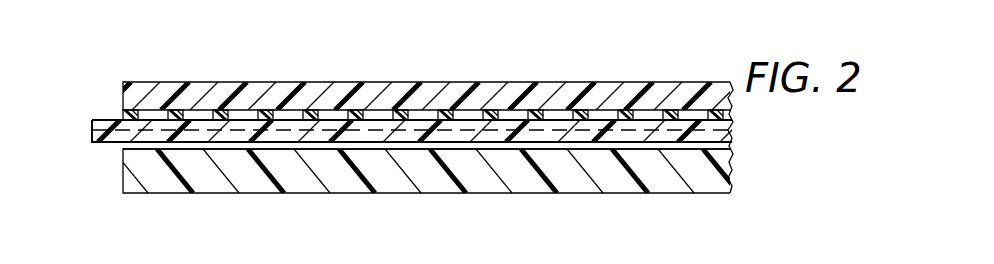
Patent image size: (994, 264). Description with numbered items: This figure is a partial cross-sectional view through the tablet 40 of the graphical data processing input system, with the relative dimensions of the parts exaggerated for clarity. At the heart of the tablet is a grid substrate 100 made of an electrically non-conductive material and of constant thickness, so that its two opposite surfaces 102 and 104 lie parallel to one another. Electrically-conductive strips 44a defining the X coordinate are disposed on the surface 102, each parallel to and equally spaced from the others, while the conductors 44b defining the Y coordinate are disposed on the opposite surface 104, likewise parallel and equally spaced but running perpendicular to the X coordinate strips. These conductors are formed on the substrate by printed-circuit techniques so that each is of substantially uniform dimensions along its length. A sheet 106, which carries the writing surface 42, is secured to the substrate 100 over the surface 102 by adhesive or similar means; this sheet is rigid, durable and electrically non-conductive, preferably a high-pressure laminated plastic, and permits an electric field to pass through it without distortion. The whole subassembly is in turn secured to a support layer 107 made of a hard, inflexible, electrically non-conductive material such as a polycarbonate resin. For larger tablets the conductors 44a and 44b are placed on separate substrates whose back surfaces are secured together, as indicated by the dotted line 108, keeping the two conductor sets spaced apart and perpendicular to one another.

The tablet 40 is at (740, 157).
The writing surface 42 is at (512, 82).
The electrically-conductive strips of the X coordinate 44a is at (243, 110).
The conductors of the Y coordinate 44b is at (385, 144).
The grid substrate 100 is at (100, 146).
The surface of the substrate 102 is at (101, 119).
The opposite surface of the substrate 104 is at (117, 145).
The sheet 106 is at (162, 92).
The support layer 107 is at (578, 180).
The dotted line 108 is at (233, 130).